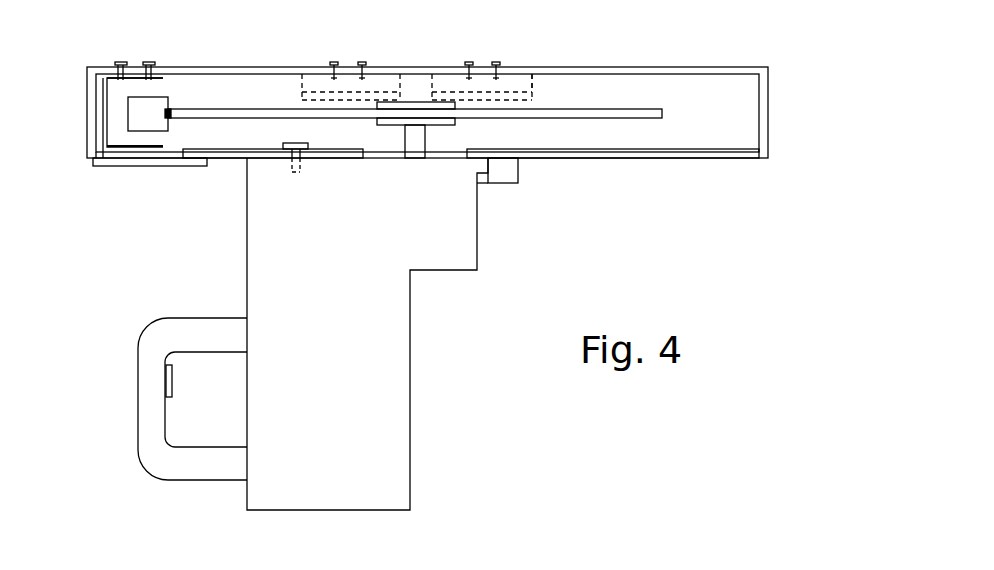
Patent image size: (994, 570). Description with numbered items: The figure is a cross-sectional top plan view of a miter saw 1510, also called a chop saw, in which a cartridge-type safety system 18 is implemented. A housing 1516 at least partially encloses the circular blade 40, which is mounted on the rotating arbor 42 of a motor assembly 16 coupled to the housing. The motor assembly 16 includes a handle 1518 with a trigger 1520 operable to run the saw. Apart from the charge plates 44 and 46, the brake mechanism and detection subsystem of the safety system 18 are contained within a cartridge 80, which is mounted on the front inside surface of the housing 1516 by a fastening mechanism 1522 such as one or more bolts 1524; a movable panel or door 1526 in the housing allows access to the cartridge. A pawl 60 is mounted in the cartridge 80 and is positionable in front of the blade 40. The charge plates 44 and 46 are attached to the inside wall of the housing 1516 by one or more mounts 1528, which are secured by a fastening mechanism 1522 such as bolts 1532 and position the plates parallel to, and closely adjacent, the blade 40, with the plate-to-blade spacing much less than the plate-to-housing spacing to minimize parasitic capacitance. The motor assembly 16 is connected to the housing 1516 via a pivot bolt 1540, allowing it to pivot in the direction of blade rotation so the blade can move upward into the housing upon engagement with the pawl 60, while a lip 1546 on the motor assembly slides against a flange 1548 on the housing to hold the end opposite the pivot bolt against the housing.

The safety system 18 is at (83, 75).
The housing 1516 is at (700, 158).
The cartridge 80 is at (135, 150).
The pawl 60 is at (172, 128).
The circular blade 40 is at (664, 115).
The rotating arbor 42 is at (425, 146).
The charge plate 44 is at (300, 98).
The charge plate 46 is at (533, 97).
The mount 1528 is at (537, 77).
The movable panel or door 1526 is at (180, 167).
The bolt 1524 is at (148, 62).
The fastening mechanism 1522 is at (170, 55).
The bolt 1532 is at (361, 62).
The pivot bolt 1540 is at (293, 172).
The motor assembly 16 is at (412, 442).
The flange 1548 is at (522, 172).
The lip 1546 is at (490, 166).
The handle 1518 is at (138, 440).
The trigger 1520 is at (172, 381).
The miter saw 1510 is at (483, 353).